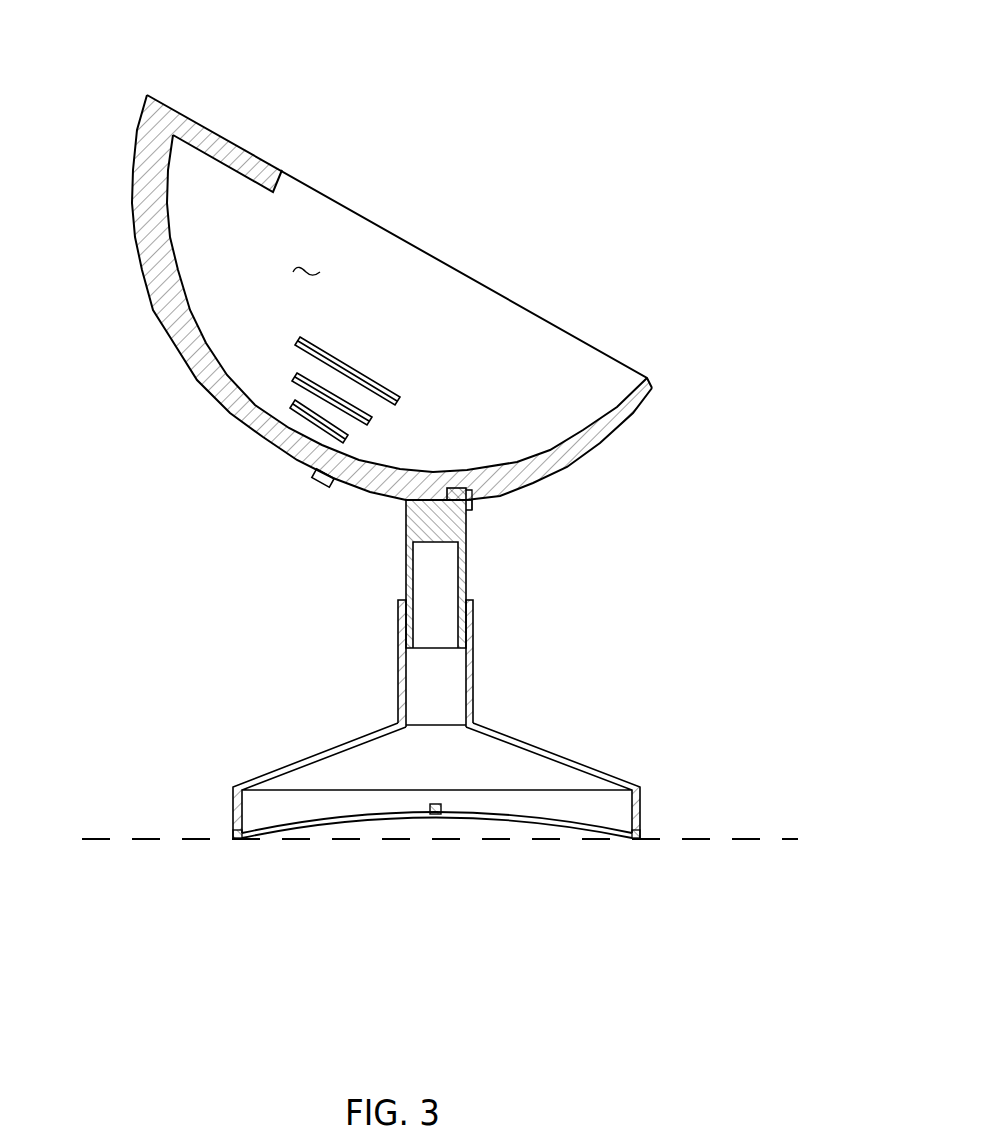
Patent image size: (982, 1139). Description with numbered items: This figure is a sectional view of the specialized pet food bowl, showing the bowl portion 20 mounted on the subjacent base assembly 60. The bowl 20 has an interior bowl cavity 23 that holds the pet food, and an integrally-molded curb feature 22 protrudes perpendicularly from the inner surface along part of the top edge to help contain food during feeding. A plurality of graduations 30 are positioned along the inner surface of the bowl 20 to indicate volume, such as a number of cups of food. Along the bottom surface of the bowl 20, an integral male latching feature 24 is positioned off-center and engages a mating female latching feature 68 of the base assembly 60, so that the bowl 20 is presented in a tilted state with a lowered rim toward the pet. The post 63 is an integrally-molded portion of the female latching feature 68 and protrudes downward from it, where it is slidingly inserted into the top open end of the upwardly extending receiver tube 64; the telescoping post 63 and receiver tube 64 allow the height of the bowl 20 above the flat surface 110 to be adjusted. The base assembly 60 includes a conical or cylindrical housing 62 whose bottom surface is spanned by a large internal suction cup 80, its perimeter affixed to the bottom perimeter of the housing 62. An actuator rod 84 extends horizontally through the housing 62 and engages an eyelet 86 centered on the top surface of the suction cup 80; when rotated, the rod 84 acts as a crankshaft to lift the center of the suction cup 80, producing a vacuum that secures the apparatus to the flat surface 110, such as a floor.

The bowl portion 20 is at (359, 290).
The curb feature 22 is at (238, 157).
The bowl cavity 23 is at (308, 270).
The graduation 30 is at (363, 372).
The male latching feature 24 is at (472, 496).
The female latching feature 68 is at (317, 483).
The post 63 is at (408, 528).
The receiver tube 64 is at (473, 622).
The base assembly 60 is at (394, 818).
The housing 62 is at (232, 810).
The suction cup 80 is at (573, 832).
The actuator rod 84 is at (440, 818).
The eyelet 86 is at (430, 818).
The flat surface 110 is at (752, 838).